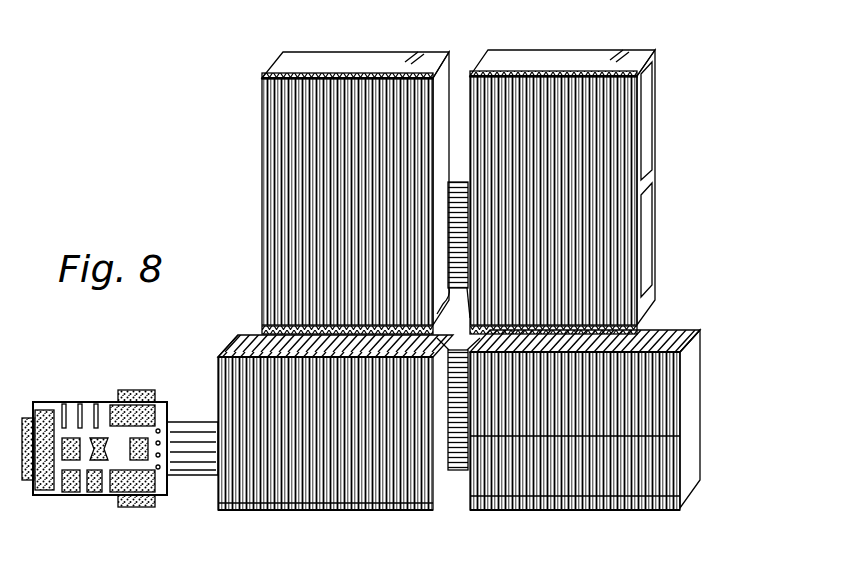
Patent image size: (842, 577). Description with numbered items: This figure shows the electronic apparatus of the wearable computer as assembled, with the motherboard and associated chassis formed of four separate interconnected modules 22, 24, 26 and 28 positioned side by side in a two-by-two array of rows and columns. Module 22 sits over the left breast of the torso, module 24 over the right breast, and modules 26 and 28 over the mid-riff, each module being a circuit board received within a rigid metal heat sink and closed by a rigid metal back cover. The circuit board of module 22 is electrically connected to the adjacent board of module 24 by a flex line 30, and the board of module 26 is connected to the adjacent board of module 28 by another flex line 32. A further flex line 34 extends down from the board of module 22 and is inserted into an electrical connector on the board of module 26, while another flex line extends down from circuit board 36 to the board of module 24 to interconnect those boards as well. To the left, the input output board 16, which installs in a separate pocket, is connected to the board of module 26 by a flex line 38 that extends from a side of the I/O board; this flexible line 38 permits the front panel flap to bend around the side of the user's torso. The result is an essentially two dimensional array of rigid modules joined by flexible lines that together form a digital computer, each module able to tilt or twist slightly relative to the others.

The input output board 16 is at (112, 405).
The module 22 is at (384, 46).
The module 24 is at (588, 46).
The module 26 is at (209, 368).
The module 28 is at (710, 421).
The flex line 30 is at (457, 180).
The flex line 32 is at (454, 472).
The flex line 34 is at (266, 343).
The circuit board 36 is at (640, 339).
The flex line 38 is at (193, 477).